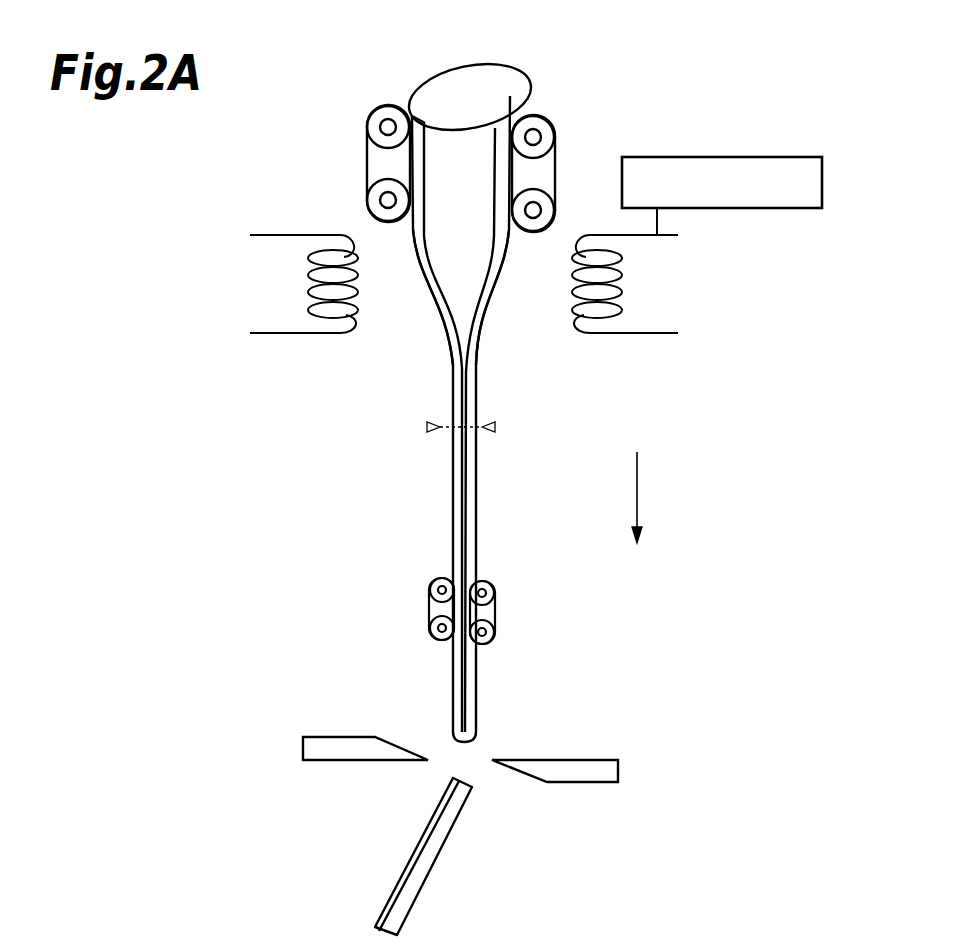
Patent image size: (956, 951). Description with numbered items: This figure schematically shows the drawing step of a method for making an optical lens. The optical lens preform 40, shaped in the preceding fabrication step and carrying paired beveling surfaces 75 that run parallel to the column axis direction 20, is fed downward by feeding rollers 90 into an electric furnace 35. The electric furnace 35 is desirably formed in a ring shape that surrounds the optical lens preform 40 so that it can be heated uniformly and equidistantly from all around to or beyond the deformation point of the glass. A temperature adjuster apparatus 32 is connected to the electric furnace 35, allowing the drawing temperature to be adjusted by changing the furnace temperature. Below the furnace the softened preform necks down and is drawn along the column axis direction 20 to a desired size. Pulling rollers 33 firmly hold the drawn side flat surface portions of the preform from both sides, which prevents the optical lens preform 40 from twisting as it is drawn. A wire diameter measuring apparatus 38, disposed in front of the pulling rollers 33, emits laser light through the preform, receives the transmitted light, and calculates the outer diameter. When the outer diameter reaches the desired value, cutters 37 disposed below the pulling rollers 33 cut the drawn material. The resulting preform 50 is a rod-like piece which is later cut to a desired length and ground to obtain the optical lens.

The optical lens preform 40 is at (431, 66).
The feeding rollers 90 is at (552, 126).
The paired beveling surfaces 75 is at (413, 233).
The temperature adjuster apparatus 32 is at (787, 210).
The electric furnace 35 is at (660, 335).
The wire diameter measuring apparatus 38 is at (495, 427).
The column axis direction 20 is at (638, 482).
The pulling rollers 33 is at (495, 592).
The cutters 37 is at (580, 760).
The preform 50 is at (438, 840).